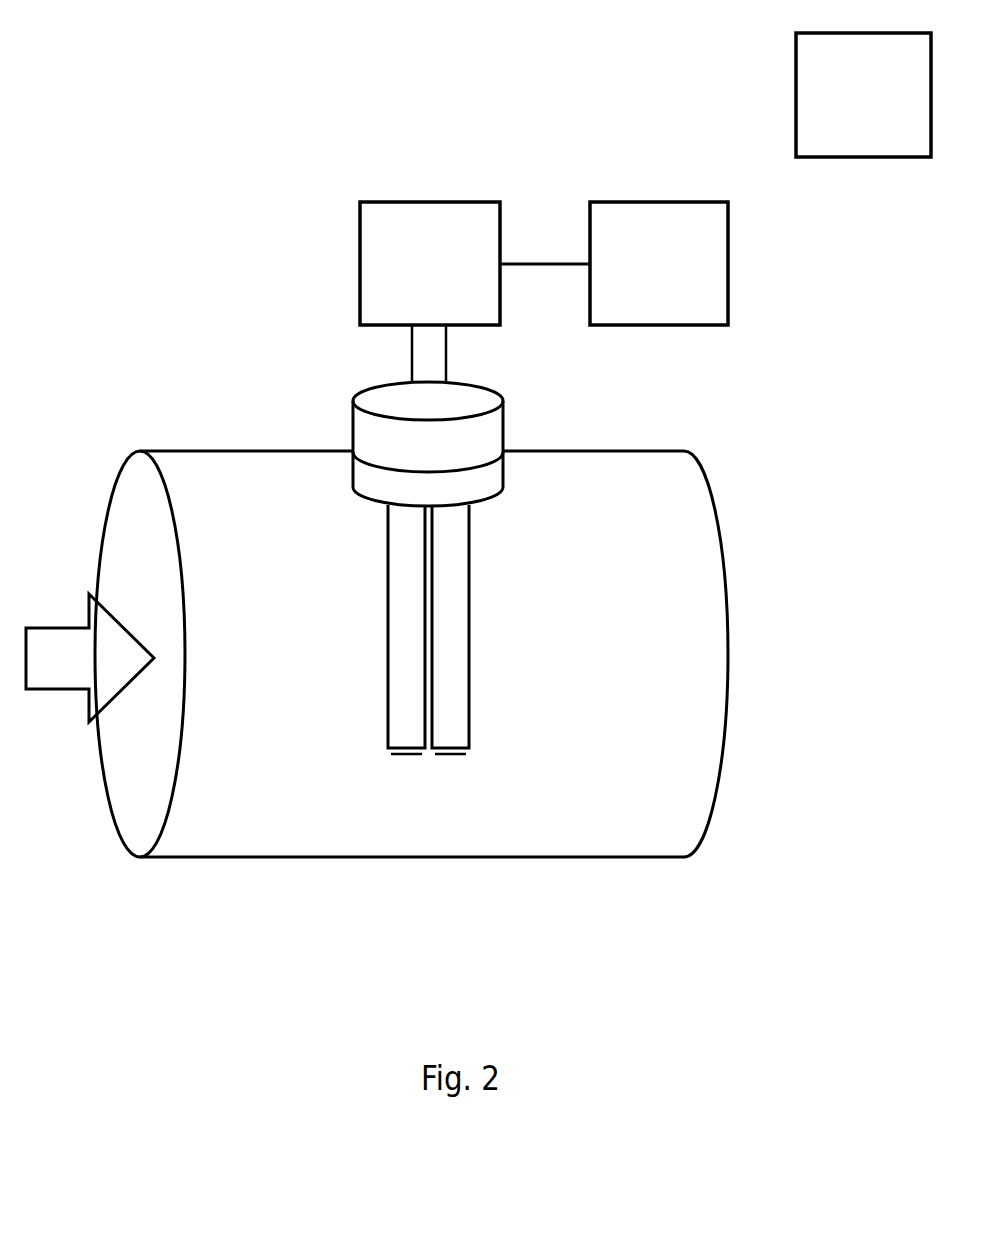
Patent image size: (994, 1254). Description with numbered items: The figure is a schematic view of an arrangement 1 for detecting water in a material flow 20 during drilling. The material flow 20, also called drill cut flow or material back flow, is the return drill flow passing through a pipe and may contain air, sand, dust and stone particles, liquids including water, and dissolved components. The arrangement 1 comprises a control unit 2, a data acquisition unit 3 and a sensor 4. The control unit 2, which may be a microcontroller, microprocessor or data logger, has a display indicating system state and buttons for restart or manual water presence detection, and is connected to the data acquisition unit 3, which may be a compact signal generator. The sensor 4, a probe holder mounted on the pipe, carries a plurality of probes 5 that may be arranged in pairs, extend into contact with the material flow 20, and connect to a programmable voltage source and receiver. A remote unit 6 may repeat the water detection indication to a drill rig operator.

The arrangement 1 is at (182, 77).
The control unit 2 is at (655, 217).
The data acquisition unit 3 is at (427, 217).
The sensor 4 is at (370, 443).
The probes 5 is at (392, 727).
The remote unit 6 is at (808, 75).
The material flow 20 is at (75, 652).